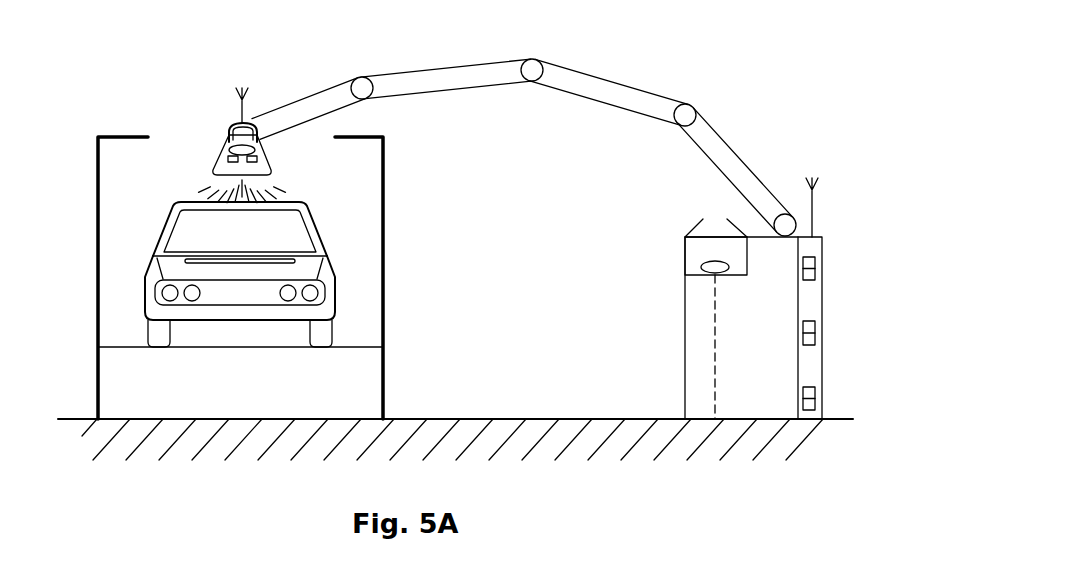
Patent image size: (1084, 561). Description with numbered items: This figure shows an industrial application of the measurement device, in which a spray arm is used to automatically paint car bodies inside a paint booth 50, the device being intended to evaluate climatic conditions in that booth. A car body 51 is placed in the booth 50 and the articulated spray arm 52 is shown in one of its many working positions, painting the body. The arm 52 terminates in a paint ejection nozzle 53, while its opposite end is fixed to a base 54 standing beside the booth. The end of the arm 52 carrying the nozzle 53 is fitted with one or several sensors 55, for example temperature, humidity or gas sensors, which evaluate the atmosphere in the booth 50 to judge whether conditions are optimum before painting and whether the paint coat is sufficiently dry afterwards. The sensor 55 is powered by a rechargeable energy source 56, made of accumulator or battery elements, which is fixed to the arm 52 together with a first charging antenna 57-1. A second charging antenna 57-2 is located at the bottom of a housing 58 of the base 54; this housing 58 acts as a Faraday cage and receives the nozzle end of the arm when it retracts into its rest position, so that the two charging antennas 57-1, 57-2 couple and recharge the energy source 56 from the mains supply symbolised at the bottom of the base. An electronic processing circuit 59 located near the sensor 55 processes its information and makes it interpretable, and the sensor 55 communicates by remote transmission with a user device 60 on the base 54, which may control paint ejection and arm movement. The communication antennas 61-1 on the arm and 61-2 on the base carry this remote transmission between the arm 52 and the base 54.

The booth 50 is at (387, 315).
The car body 51 is at (327, 278).
The spray arm 52 is at (443, 77).
The paint ejection nozzle 53 is at (278, 177).
The base 54 is at (684, 350).
The sensor 55 is at (235, 160).
The rechargeable energy source 56 is at (228, 157).
The first charging antenna 57-1 is at (230, 127).
The second charging antenna 57-2 is at (711, 271).
The housing 58 is at (684, 263).
The electronic processing circuit 59 is at (272, 166).
The user device 60 is at (813, 302).
The first antenna 61-1 is at (245, 105).
The second antenna 61-2 is at (812, 215).